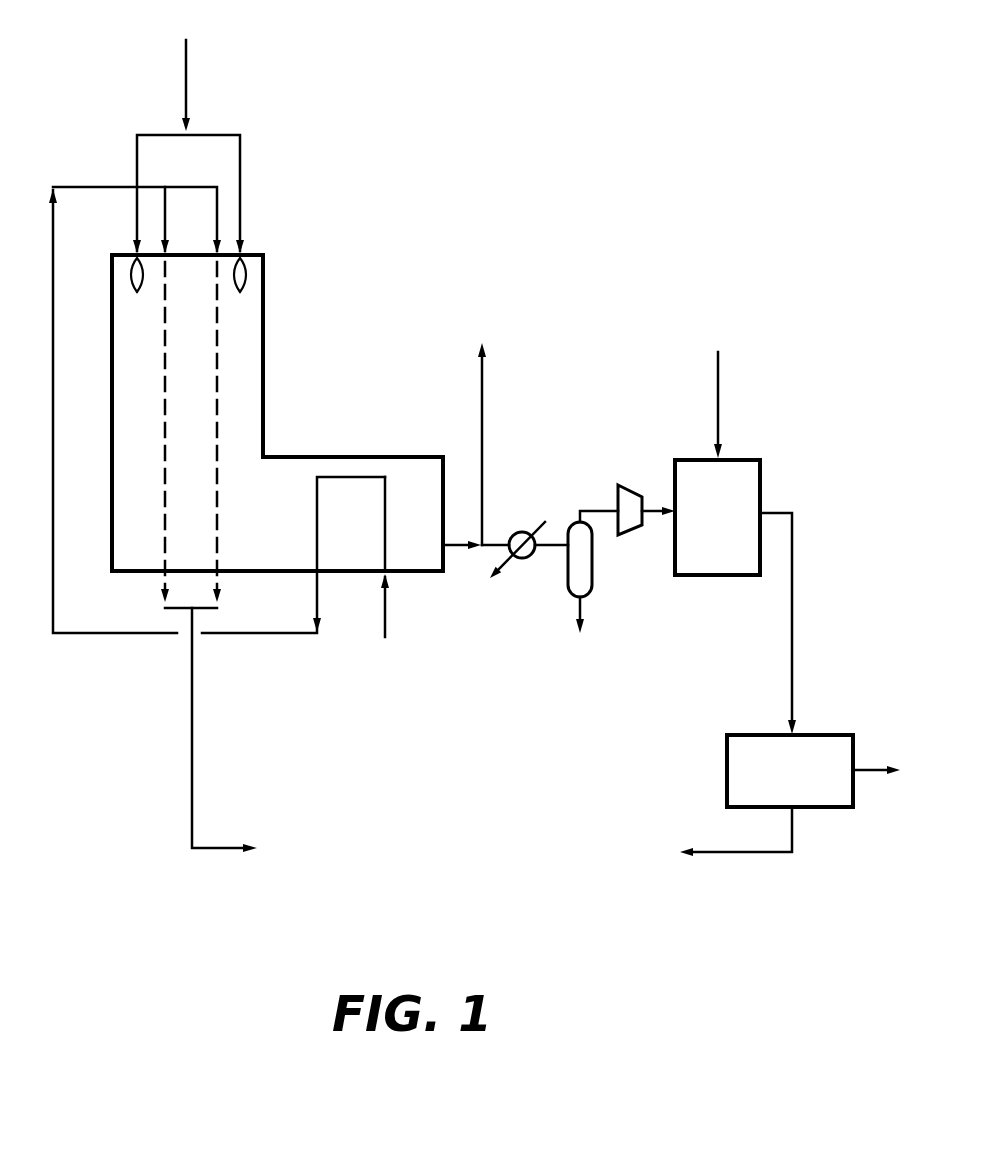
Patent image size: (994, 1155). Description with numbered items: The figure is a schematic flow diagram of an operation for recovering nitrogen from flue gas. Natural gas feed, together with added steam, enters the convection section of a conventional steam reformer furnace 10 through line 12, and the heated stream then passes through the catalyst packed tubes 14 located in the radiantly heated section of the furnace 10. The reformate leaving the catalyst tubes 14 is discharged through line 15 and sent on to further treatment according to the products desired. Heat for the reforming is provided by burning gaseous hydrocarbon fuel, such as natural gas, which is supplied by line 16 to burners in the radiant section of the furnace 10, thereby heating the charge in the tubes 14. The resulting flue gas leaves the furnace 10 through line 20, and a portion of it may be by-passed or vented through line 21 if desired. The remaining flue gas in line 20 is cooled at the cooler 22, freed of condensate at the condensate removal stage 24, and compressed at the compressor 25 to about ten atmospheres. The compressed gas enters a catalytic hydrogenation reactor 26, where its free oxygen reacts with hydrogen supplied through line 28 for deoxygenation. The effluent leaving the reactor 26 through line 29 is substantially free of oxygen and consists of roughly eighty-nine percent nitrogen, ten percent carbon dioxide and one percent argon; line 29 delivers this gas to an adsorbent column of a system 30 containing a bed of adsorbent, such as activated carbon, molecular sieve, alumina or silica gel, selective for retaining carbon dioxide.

The steam reformer furnace 10 is at (303, 437).
The line 12 is at (387, 614).
The catalyst packed tubes 14 is at (216, 305).
The line 15 is at (220, 845).
The line 16 is at (188, 97).
The line 20 is at (456, 544).
The line 21 is at (486, 408).
The cooler 22 is at (517, 526).
The condensate removal 24 is at (567, 592).
The compressor 25 is at (634, 530).
The catalytic hydrogenation reactor 26 is at (703, 525).
The line 28 is at (724, 405).
The line 29 is at (796, 566).
The system 30 is at (775, 785).